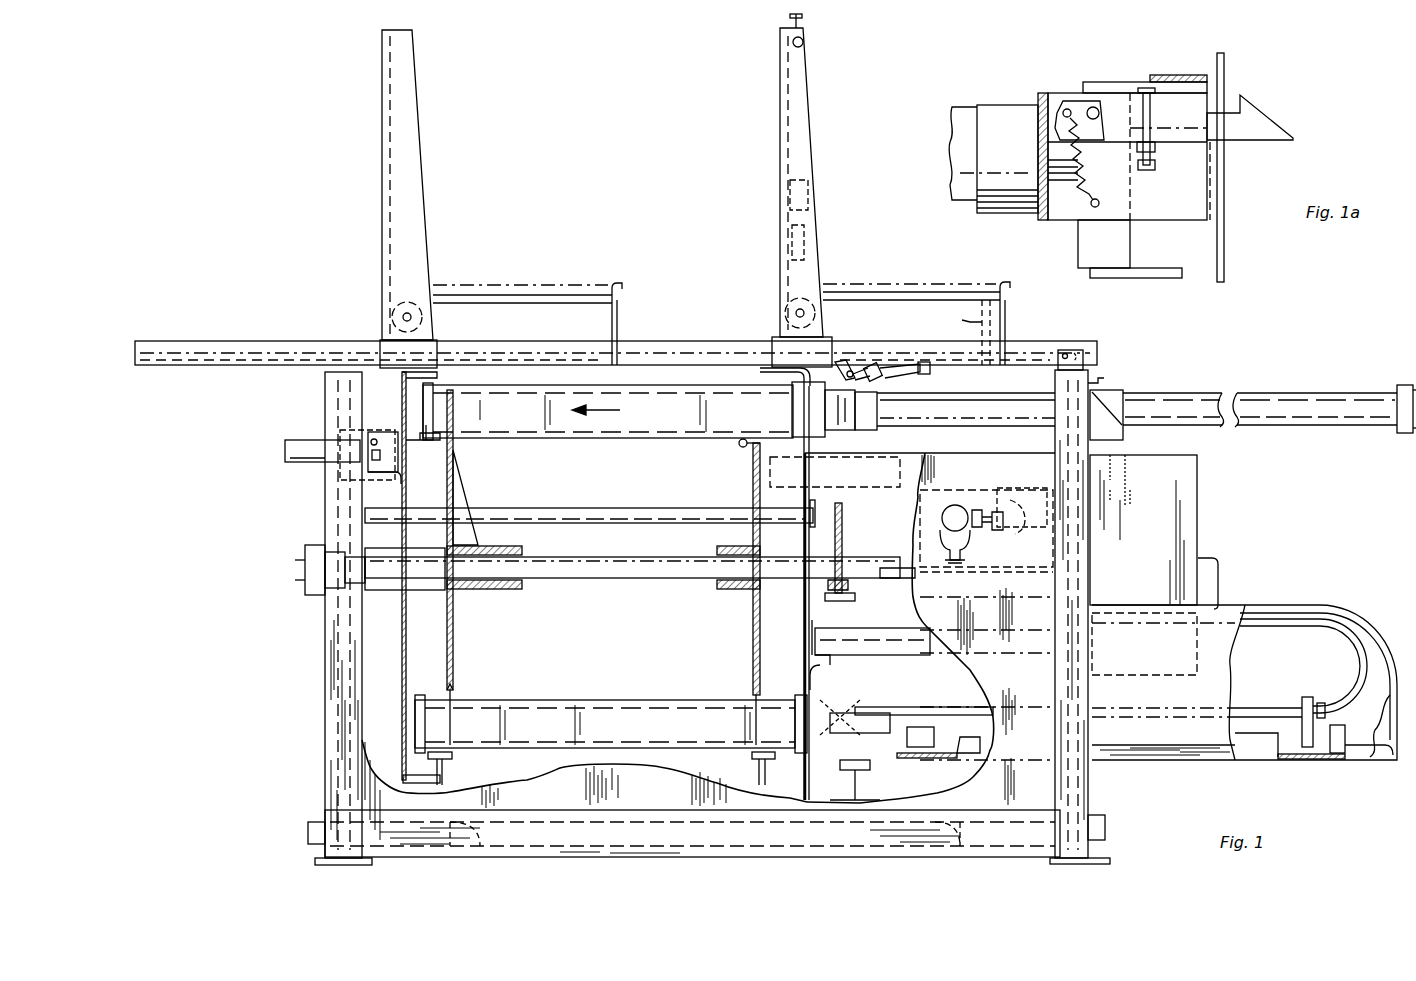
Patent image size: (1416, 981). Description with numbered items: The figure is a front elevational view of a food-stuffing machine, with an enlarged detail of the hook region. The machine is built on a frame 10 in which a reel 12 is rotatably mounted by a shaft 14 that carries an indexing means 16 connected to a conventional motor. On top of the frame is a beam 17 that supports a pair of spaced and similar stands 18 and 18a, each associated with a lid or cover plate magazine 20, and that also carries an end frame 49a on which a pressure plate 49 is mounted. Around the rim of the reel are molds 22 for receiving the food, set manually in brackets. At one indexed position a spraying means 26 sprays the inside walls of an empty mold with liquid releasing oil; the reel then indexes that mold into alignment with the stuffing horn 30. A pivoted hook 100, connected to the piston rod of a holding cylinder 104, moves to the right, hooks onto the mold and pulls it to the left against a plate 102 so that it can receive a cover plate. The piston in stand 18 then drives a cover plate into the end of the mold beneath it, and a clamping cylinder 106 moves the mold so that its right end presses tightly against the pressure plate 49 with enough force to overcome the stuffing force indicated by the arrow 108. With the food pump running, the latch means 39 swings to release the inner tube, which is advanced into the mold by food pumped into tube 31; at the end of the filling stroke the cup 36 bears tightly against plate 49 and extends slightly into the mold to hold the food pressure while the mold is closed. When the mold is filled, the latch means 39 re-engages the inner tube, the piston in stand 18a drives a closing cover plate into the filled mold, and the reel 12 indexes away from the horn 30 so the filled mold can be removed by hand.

In FIG. 1, the frame 10 is at (1094, 800).
In FIG. 1, the reel 12 is at (455, 650).
In FIG. 1, the shaft 14 is at (632, 578).
In FIG. 1, the indexing means 16 is at (843, 518).
In FIG. 1, the beam 17 is at (1054, 340).
In FIG. 1, the stand 18 is at (422, 196).
In FIG. 1, the stand 18a is at (778, 131).
In FIG. 1, the cover plate magazine 20 is at (620, 306).
In FIG. 1, the mold 22 is at (656, 430).
In FIG. 1, the spraying means 26 is at (875, 712).
In FIG. 1, the horn 30 is at (1032, 394).
In FIG. 1, the tube 31 is at (1308, 374).
In FIG. 1, the cup 36 is at (846, 432).
In FIG. 1, the latch means 39 is at (915, 376).
In FIG. 1, the pressure plate 49 is at (810, 432).
In FIG. 1, the end frame 49a is at (758, 374).
In FIG. 1, the pivoted hook 100 is at (418, 448).
In FIG. 1A, the pivoted hook 100 is at (1252, 138).
In FIG. 1, the plate 102 is at (402, 410).
In FIG. 1A, the plate 102 is at (1224, 240).
In FIG. 1, the holding cylinder 104 is at (340, 456).
In FIG. 1A, the holding cylinder 104 is at (1005, 108).
In FIG. 1, the clamping cylinder 106 is at (298, 440).
In FIG. 1, the arrow 108 is at (606, 404).